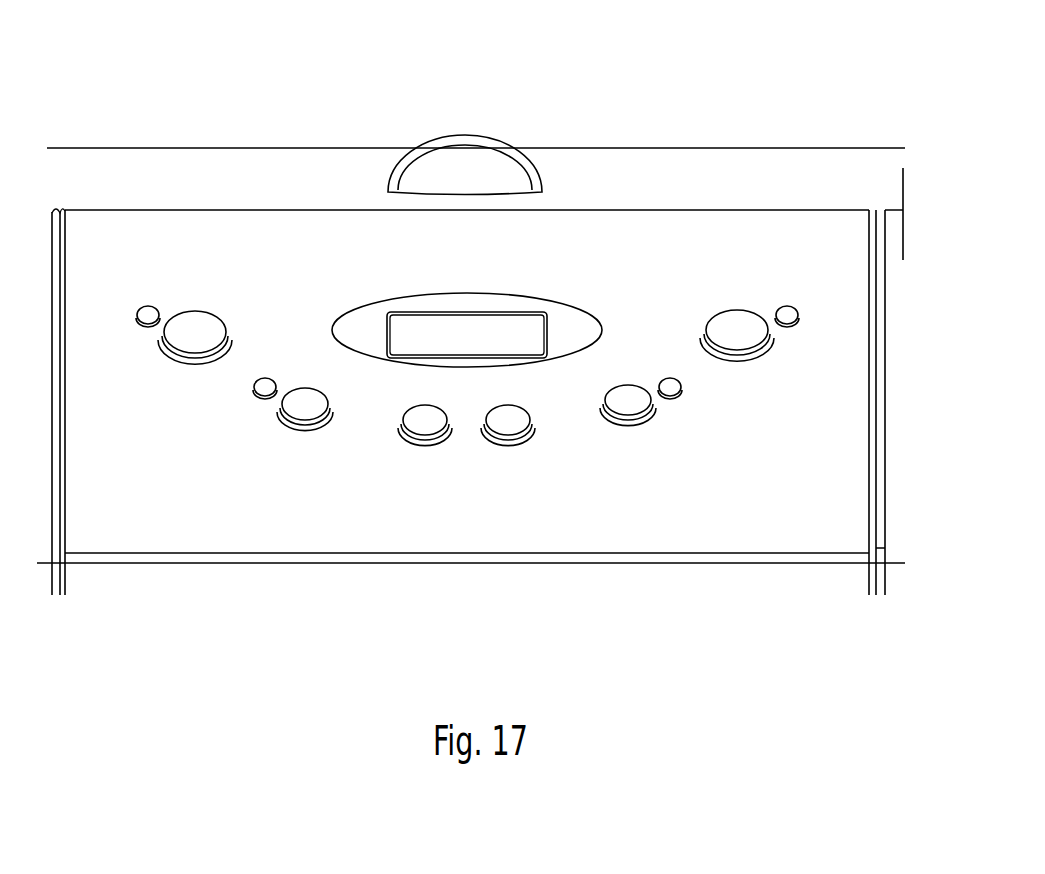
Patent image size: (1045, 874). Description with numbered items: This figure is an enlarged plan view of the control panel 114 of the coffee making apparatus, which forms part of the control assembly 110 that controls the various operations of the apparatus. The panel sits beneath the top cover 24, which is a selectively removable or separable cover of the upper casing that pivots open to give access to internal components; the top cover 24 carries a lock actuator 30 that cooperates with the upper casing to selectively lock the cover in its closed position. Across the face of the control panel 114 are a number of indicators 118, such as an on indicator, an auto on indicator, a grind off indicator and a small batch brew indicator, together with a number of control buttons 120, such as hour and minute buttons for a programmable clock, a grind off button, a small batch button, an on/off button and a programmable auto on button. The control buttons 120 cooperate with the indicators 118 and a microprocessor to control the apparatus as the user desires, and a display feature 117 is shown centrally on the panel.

The control assembly 110 is at (810, 68).
The top cover 24 is at (633, 157).
The control panel 114 is at (257, 228).
The lock actuator 30 is at (495, 175).
The display 117 is at (571, 312).
The control buttons 120 is at (190, 348).
The indicators 118 is at (137, 317).